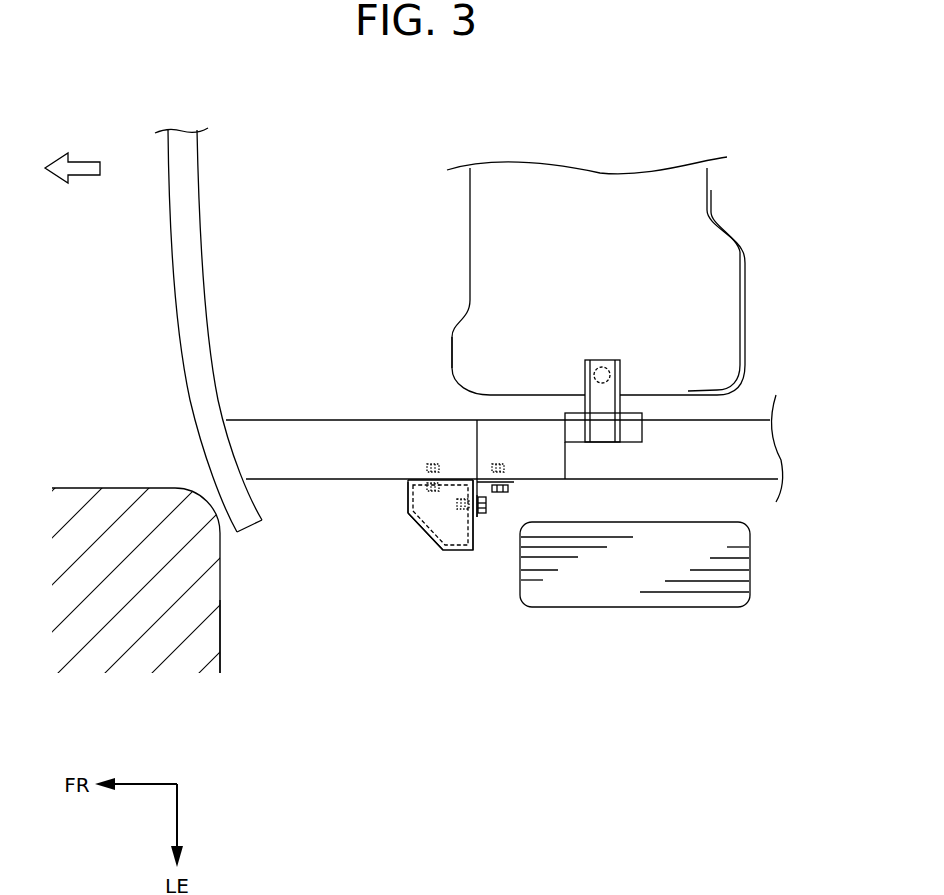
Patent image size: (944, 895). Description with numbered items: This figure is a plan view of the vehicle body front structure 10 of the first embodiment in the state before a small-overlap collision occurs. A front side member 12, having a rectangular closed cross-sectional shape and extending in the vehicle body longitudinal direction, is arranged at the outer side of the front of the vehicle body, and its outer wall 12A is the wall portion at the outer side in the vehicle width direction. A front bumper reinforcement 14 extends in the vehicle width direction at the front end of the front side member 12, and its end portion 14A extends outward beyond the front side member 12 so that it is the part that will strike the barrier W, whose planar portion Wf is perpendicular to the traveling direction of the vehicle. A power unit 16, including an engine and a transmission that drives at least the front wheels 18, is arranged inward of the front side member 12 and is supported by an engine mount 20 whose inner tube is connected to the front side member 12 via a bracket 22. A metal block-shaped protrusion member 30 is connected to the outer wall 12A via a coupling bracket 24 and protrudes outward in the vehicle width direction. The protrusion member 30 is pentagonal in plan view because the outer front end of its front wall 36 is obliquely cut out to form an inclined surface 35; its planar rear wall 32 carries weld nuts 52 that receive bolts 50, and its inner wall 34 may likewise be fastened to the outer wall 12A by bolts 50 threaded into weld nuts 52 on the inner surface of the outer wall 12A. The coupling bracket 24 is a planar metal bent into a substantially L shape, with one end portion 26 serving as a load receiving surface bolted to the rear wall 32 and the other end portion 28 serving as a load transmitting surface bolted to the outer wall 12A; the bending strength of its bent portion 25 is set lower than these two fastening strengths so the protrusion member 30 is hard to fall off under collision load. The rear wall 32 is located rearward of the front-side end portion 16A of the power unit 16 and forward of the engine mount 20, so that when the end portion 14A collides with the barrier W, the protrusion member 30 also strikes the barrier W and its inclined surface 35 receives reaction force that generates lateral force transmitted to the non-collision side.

The mounting structure 10 is at (466, 516).
The front side member 12 is at (270, 412).
The outer wall 12A is at (301, 482).
The front bumper reinforcement 14 is at (173, 256).
The end portion of front bumper reinforcement 14A is at (250, 522).
The power unit 16 is at (598, 195).
The vehicle body front-side end portion of power unit 16A is at (447, 348).
The front wheel 18 is at (620, 600).
The engine mount 20 is at (602, 368).
The bracket 22 is at (638, 430).
The coupling bracket 24 is at (478, 472).
The bent portion 25 is at (474, 478).
The one end portion (load receiving surface) 26 is at (486, 513).
The other end portion (load transmitting surface) 28 is at (512, 488).
The protrusion member 30 is at (407, 507).
The rear wall (rear end portion) 32 is at (478, 519).
The inner wall 34 is at (412, 478).
The inclined surface 35 is at (425, 528).
The front wall 36 is at (407, 493).
The bolt 50 is at (418, 508).
The weld nut 52 is at (428, 466).
The barrier W is at (118, 482).
The planar portion of barrier Wf is at (222, 637).